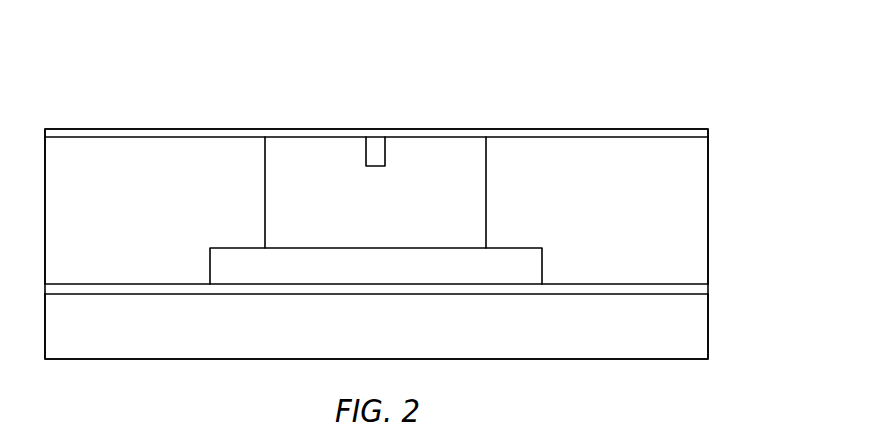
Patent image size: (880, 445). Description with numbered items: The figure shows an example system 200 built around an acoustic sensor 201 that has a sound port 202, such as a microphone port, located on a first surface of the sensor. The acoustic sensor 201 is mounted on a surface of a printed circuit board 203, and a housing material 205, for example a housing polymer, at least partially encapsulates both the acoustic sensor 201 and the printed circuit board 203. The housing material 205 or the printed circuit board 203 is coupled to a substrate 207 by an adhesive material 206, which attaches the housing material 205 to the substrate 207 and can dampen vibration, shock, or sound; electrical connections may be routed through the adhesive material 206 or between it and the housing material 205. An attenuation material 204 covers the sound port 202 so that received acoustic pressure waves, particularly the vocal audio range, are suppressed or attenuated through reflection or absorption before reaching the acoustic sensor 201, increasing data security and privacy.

The system 200 is at (707, 45).
The acoustic sensor 201 is at (487, 172).
The sound port 202 is at (386, 143).
The printed circuit board 203 is at (543, 257).
The attenuation material 204 is at (708, 131).
The housing material 205 is at (709, 165).
The adhesive material 206 is at (709, 284).
The substrate 207 is at (709, 312).